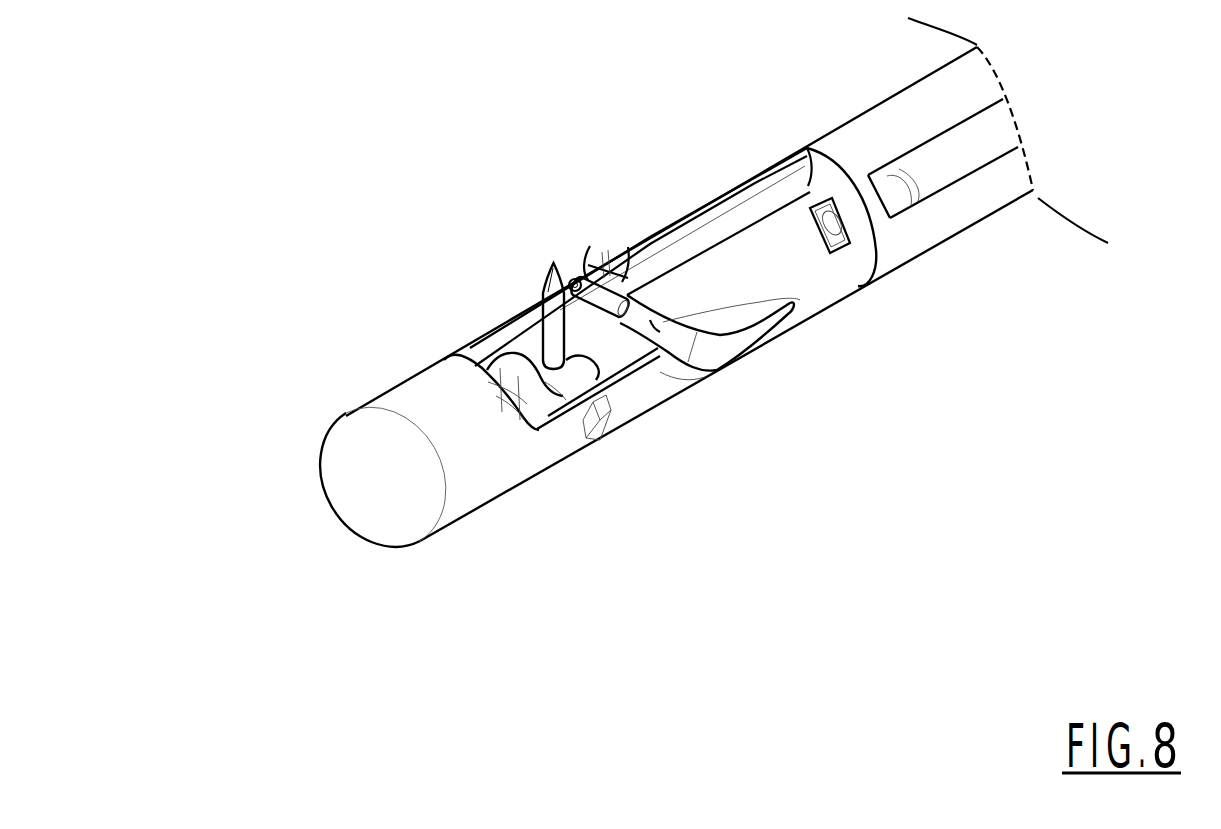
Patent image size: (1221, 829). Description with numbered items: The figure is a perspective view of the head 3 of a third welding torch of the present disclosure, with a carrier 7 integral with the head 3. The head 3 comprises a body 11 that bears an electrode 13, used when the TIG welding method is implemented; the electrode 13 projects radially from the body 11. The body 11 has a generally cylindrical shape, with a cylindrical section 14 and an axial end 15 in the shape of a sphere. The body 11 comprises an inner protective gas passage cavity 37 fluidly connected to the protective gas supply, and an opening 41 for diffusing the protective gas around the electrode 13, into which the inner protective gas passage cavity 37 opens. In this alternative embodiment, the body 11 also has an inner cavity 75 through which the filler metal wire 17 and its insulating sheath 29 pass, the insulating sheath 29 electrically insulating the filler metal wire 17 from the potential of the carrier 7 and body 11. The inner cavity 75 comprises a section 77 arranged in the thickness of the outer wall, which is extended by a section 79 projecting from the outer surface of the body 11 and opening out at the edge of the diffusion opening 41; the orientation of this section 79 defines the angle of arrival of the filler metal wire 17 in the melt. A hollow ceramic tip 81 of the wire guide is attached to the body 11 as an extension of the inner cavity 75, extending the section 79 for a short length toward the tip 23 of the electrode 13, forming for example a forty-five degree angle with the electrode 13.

The head 3 is at (285, 312).
The carrier 7 is at (874, 126).
The body 11 is at (405, 391).
The electrode 13 is at (522, 265).
The cylindrical section 14 is at (477, 469).
The axial end 15 is at (368, 495).
The filler metal wire 17 is at (570, 283).
The tip of the electrode 23 is at (542, 290).
The insulating sheath 29 is at (563, 243).
The inner protective gas passage cavity 37 is at (625, 374).
The opening 41 is at (477, 364).
The inner cavity 75 is at (724, 377).
The section 77 is at (752, 328).
The section 79 is at (660, 325).
The ceramic tip 81 is at (615, 296).